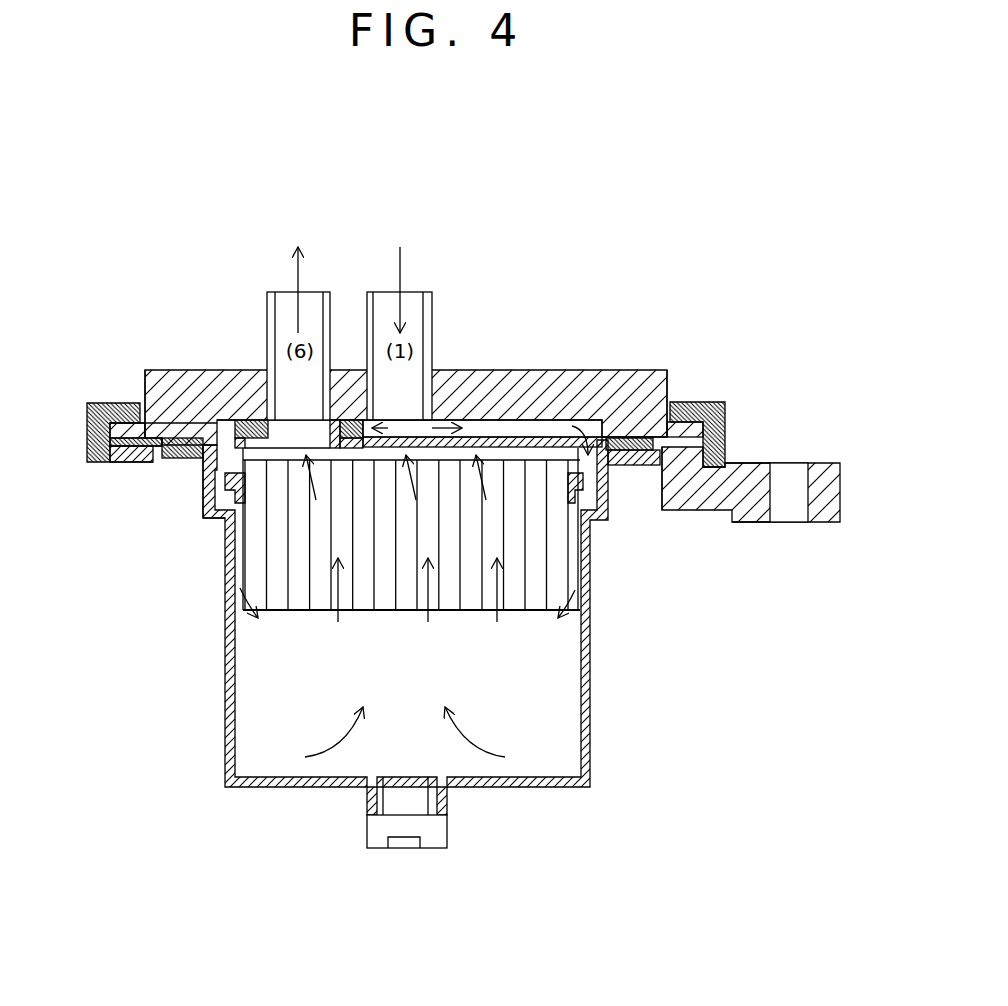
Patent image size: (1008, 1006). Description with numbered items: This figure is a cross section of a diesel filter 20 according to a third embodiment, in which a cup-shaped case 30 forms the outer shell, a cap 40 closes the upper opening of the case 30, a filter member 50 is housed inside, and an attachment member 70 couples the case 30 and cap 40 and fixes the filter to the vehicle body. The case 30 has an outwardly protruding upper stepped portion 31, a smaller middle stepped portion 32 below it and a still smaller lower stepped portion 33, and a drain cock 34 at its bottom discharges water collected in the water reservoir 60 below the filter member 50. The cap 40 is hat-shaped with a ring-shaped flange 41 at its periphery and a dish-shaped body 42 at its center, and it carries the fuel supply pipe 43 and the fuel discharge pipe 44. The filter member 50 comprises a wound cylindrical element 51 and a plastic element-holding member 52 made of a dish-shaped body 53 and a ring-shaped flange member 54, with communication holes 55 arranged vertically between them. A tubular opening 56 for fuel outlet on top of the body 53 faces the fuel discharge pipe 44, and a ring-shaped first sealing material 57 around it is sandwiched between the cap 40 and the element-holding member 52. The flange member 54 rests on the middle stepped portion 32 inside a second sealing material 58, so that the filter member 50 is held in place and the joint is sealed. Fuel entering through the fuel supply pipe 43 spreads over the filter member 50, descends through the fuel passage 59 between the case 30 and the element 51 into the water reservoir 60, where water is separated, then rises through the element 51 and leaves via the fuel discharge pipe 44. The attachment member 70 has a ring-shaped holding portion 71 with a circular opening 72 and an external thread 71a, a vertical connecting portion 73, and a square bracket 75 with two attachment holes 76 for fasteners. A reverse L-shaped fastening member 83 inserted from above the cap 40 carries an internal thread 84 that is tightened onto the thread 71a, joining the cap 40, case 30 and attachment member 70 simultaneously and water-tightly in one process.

The diesel filter 20 is at (727, 360).
The case 30 is at (598, 712).
The upper stepped portion 31 is at (100, 440).
The middle stepped portion 32 is at (190, 470).
The lower stepped portion 33 is at (210, 520).
The drain cock 34 is at (440, 830).
The cap 40 is at (205, 365).
The flange 41 is at (108, 425).
The body 42 is at (572, 370).
The fuel supply pipe 43 is at (425, 292).
The fuel discharge pipe 44 is at (272, 292).
The filter member 50 is at (575, 568).
The element 51 is at (565, 527).
The element-holding member 52 is at (512, 428).
The body 53 is at (478, 437).
The flange member 54 is at (232, 437).
The communication holes 55 is at (225, 420).
The opening for fuel outlet 56 is at (338, 385).
The first sealing material 57 is at (236, 420).
The second sealing material 58 is at (172, 458).
The fuel passage 59 is at (232, 578).
The water reservoir 60 is at (265, 740).
The attachment member 70 is at (824, 527).
The holding portion 71 is at (128, 463).
The thread 71a is at (105, 465).
The circular opening 72 is at (655, 468).
The connecting portion 73 is at (730, 455).
The bracket 75 is at (760, 522).
The attachment holes 76 is at (790, 490).
The fastening member 83 is at (97, 402).
The thread 84 is at (100, 452).